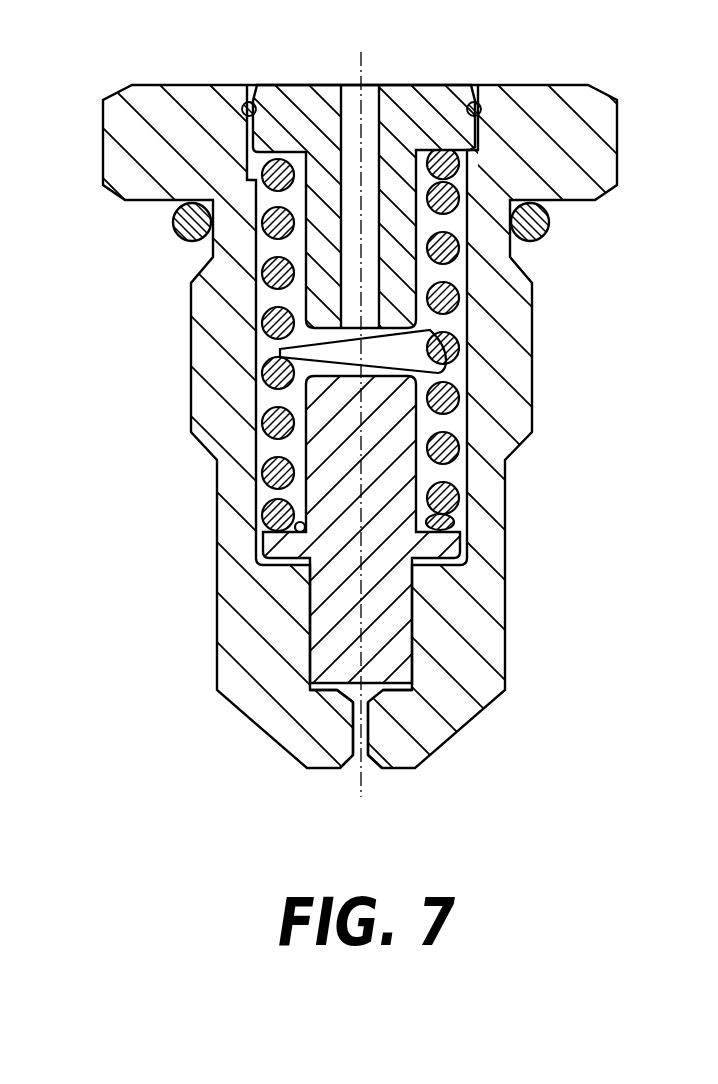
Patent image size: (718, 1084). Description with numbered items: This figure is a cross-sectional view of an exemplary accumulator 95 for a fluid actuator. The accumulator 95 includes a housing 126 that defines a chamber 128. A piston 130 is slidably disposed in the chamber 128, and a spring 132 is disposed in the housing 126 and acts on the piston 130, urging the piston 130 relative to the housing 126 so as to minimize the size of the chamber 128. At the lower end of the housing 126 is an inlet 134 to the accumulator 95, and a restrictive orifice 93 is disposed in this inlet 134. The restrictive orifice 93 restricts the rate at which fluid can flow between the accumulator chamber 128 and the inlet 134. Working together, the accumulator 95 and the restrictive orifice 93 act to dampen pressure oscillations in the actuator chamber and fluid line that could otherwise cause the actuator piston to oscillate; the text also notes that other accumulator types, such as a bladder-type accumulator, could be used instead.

The accumulator 95 is at (359, 452).
The housing 126 is at (495, 557).
The chamber 128 is at (425, 690).
The piston 130 is at (387, 443).
The spring 132 is at (278, 322).
The inlet 134 is at (372, 772).
The restrictive orifice 93 is at (355, 737).